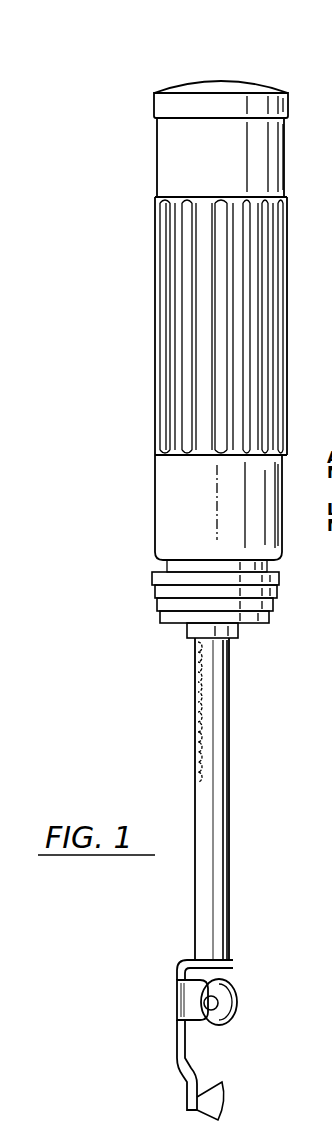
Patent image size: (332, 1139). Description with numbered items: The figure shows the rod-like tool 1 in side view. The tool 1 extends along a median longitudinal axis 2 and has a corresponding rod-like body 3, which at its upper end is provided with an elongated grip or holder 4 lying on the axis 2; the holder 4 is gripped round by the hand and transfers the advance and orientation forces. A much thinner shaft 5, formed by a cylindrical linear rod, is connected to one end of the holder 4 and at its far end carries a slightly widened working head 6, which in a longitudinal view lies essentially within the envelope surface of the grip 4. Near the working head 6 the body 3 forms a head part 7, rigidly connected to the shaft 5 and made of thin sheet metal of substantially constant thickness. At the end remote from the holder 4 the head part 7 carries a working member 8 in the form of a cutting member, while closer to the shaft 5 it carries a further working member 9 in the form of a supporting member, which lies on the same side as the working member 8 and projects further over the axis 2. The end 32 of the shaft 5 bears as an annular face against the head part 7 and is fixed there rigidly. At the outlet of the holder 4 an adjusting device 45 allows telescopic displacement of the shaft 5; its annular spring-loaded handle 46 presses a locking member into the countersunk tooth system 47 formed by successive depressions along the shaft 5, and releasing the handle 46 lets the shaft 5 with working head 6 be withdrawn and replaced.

The rod-like tool 1 is at (136, 208).
The elongated grip or holder 4 is at (160, 327).
The median longitudinal axis 2 is at (216, 503).
The axial spring-loaded handle 46 is at (270, 600).
The adjusting device 45 is at (253, 634).
The rod-like body 3 is at (155, 651).
The shaft 5 is at (225, 739).
The countersunk tooth system 47 is at (196, 723).
The end of the shaft 32 is at (206, 958).
The further working member 9 is at (231, 990).
The working head 6 is at (147, 998).
The head part 7 is at (173, 1041).
The working member 8 is at (190, 1100).